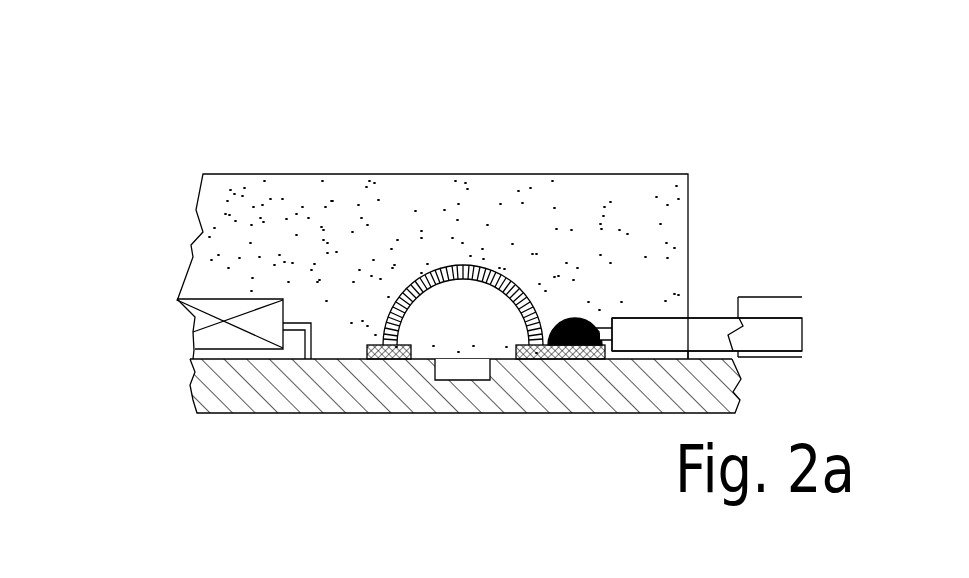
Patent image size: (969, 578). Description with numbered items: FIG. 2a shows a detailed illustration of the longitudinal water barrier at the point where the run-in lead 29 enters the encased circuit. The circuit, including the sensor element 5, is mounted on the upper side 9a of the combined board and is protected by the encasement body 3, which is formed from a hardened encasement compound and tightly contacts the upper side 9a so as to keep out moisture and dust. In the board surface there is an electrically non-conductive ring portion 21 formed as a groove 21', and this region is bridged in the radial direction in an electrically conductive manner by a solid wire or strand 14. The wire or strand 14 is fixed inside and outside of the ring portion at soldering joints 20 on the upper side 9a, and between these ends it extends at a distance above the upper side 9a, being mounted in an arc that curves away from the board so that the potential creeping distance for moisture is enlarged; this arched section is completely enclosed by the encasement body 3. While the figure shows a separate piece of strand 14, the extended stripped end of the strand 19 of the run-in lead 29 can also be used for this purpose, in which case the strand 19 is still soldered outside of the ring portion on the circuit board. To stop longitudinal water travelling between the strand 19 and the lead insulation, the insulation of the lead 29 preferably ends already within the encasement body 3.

The encasement body 3 is at (268, 192).
The sensor element 5 is at (204, 306).
The upper side 9a is at (192, 359).
The solid wire or strand 14 is at (405, 290).
The stripped end of the strand 19 is at (600, 328).
The soldering joints 20 is at (578, 318).
The ring portion 21 is at (460, 208).
The groove 21' is at (462, 369).
The lead 29 is at (710, 330).